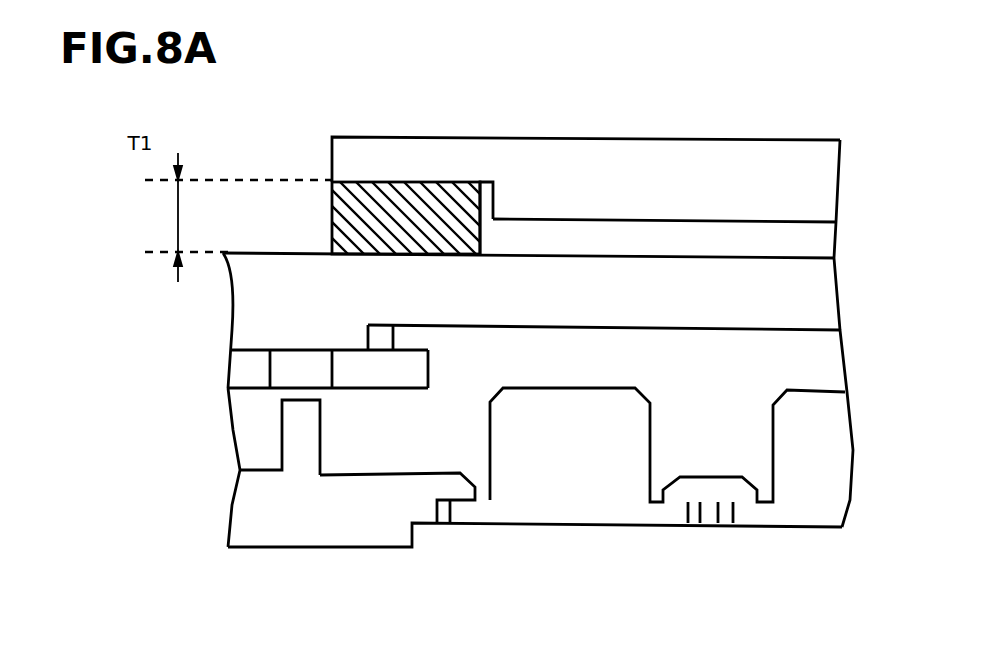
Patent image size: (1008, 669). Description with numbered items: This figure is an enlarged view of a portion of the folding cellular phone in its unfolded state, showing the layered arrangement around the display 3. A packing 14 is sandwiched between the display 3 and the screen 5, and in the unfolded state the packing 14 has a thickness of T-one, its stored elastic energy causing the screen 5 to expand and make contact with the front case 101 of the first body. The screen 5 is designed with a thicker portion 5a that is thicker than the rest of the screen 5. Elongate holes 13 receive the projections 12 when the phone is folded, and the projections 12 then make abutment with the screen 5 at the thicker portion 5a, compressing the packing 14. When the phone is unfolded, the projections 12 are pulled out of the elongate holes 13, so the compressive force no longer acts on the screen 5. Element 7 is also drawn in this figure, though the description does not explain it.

The display 3 is at (596, 157).
The screen 5 is at (498, 277).
The thicker portion 5a is at (353, 342).
The pixel electrode / layer 7 is at (578, 388).
The projection 12 is at (298, 430).
The elongate hole 13 is at (290, 365).
The packing 14 is at (400, 197).
The front case 101 is at (380, 370).